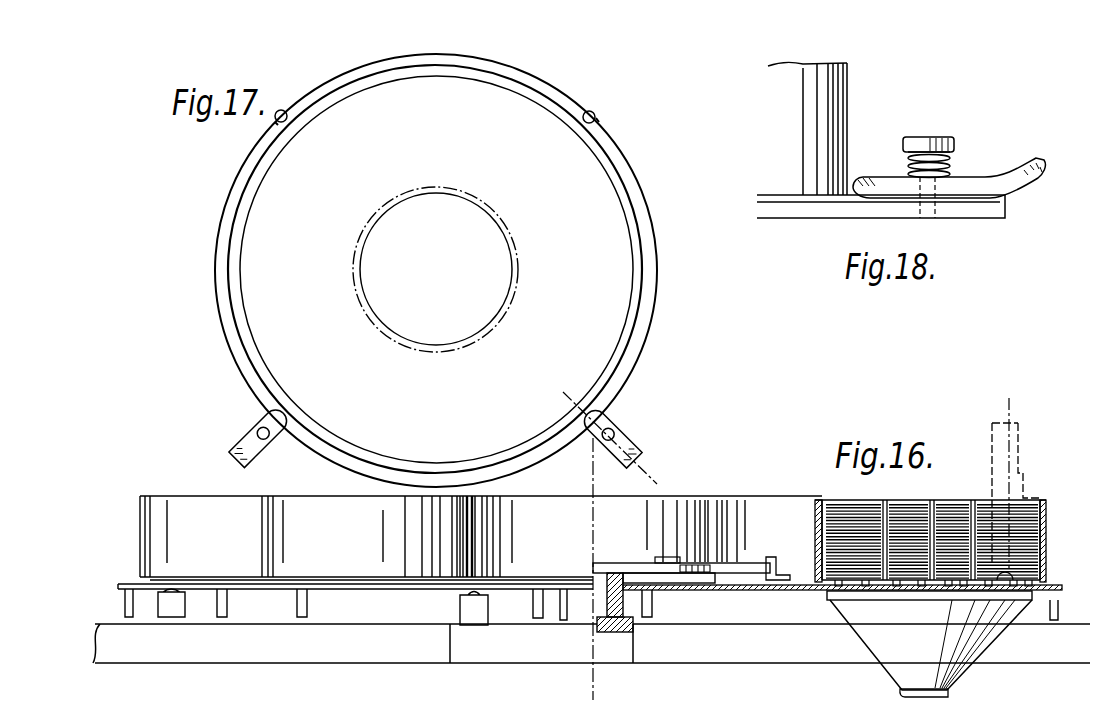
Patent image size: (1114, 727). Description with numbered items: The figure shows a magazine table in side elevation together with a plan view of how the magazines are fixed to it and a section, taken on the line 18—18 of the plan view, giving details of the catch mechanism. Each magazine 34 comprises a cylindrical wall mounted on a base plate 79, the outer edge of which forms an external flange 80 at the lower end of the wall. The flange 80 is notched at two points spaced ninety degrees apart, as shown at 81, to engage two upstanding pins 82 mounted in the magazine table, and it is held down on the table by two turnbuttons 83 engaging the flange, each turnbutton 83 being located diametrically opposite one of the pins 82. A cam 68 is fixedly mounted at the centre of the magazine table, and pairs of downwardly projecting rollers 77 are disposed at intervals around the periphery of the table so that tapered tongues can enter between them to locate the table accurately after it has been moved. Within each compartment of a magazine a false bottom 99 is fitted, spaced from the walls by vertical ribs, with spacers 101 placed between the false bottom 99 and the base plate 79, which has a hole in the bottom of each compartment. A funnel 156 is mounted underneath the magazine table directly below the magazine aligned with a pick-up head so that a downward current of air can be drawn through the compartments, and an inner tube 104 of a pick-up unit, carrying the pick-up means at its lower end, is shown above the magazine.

In FIG. 17, the section line 18 is at (571, 388).
In FIG. 18, the magazine 34 is at (840, 112).
In FIG. 16, the magazine 34 is at (262, 512).
In FIG. 16, the cam 68 is at (635, 566).
In FIG. 16, the rollers 77 is at (297, 605).
In FIG. 17, the base plate 79 is at (240, 349).
In FIG. 16, the base plate 79 is at (712, 591).
In FIG. 17, the external flange 80 is at (658, 273).
In FIG. 18, the external flange 80 is at (855, 197).
In FIG. 16, the external flange 80 is at (1062, 594).
In FIG. 17, the notch 81 is at (276, 124).
In FIG. 17, the upstanding pin 82 is at (288, 117).
In FIG. 17, the turnbutton 83 is at (250, 443).
In FIG. 18, the turnbutton 83 is at (985, 185).
In FIG. 16, the false bottom 99 is at (1020, 576).
In FIG. 16, the spacer 101 is at (853, 586).
In FIG. 16, the inner tube 104 is at (1003, 477).
In FIG. 16, the funnel 156 is at (880, 638).